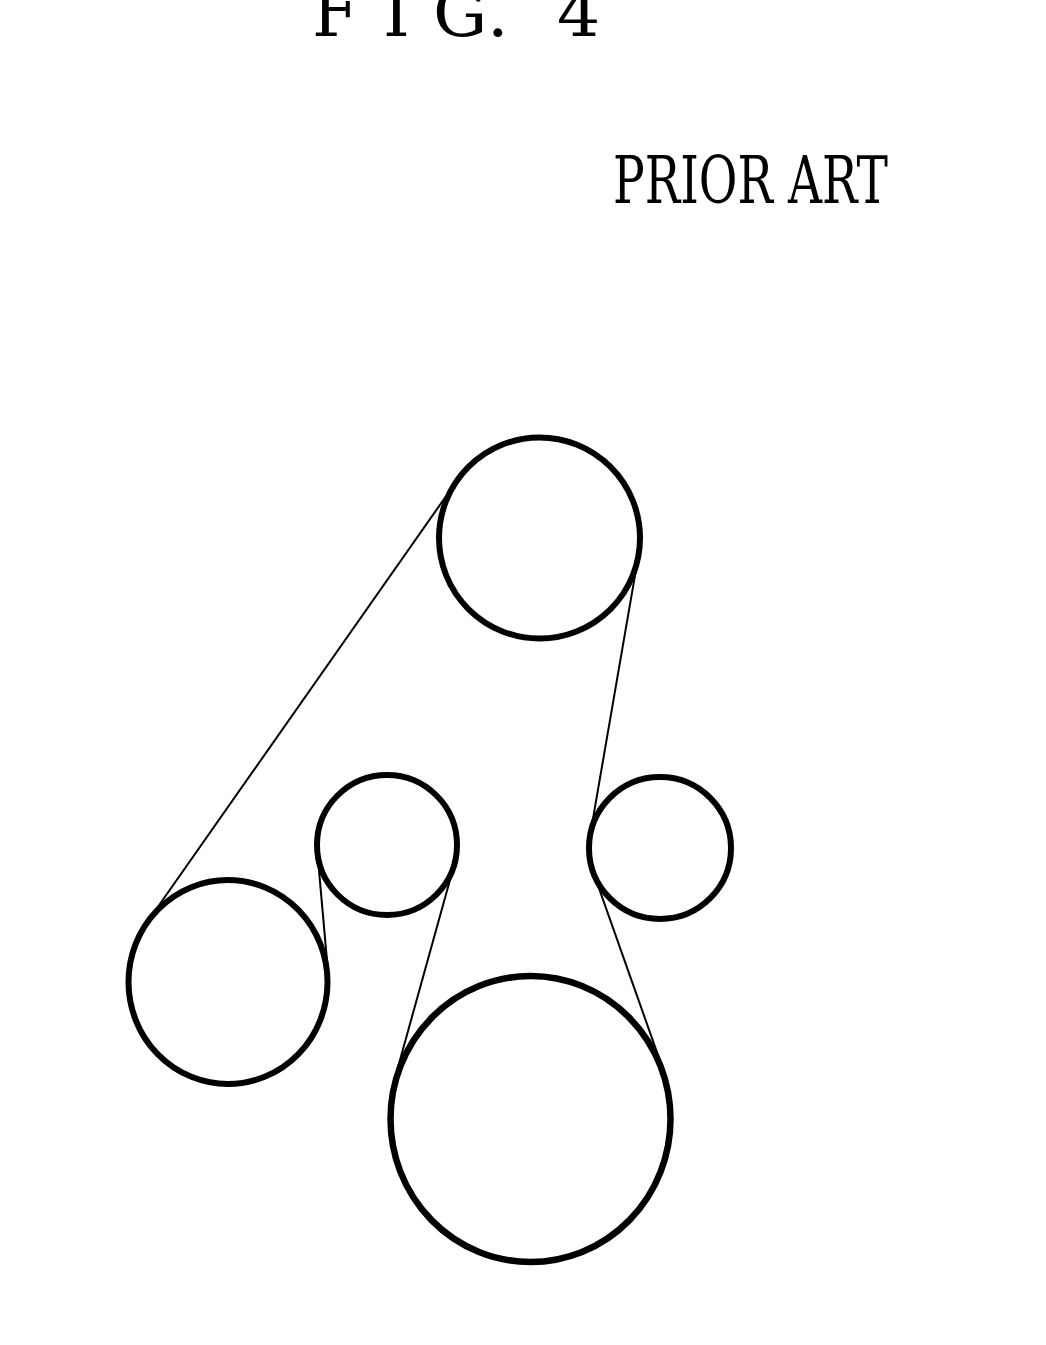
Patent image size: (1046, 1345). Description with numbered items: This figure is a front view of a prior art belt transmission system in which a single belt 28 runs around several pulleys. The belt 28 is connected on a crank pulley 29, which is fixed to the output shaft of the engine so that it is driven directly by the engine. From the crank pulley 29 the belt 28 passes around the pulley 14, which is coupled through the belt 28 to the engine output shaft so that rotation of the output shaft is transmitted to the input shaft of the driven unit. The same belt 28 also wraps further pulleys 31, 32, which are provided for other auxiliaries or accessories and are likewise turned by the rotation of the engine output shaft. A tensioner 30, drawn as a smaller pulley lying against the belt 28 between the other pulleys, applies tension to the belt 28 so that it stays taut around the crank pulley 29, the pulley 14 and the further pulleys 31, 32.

The pulley 14 is at (641, 523).
The belt 28 is at (312, 686).
The crank pulley 29 is at (672, 1143).
The tensioner 30 is at (441, 793).
The further pulley 31 is at (723, 808).
The further pulley 32 is at (153, 1053).